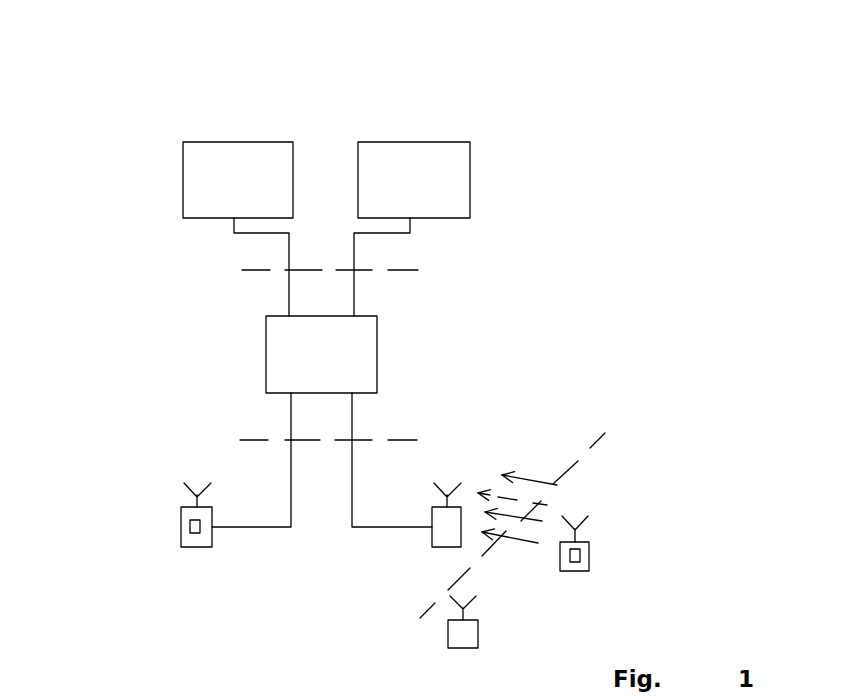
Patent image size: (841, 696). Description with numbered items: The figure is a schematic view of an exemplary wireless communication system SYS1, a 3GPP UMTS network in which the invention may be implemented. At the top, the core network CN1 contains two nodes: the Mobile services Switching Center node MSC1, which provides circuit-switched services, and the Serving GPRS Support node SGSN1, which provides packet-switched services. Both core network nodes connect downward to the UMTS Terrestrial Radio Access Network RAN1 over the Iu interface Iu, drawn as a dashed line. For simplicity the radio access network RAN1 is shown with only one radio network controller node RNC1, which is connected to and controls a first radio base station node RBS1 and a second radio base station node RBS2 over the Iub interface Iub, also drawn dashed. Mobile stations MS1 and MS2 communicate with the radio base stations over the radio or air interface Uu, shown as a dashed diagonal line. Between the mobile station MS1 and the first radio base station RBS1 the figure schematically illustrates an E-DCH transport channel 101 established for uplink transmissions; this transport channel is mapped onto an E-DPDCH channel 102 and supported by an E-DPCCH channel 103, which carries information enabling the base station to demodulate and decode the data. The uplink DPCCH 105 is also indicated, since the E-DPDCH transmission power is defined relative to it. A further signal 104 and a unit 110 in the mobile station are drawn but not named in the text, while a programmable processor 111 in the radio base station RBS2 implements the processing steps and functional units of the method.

The E-DCH transport channel 101 is at (478, 490).
The E-DPDCH channel 102 is at (541, 522).
The E-DPCCH channel 103 is at (566, 483).
The uplink signal from MS1 104 is at (526, 480).
The uplink DPCCH 105 is at (504, 537).
The control unit of mobile station MS1 110 is at (580, 553).
The programmable processor 111 is at (190, 527).
The wireless communication system SYS1 is at (788, 25).
The core network CN1 is at (88, 163).
The UMTS Terrestrial Radio Access Network RAN1 is at (115, 352).
The Mobile services Switching Center node MSC1 is at (235, 142).
The Serving GPRS Support node SGSN1 is at (410, 142).
The radio network controller node RNC1 is at (266, 350).
The first radio base station node RBS1 is at (447, 548).
The second radio base station node RBS2 is at (198, 548).
The mobile station MS1 is at (576, 571).
The mobile station MS2 is at (466, 648).
The Iu interface Iu is at (303, 269).
The Iub interface Iub is at (298, 439).
The Uu interface Uu is at (532, 512).